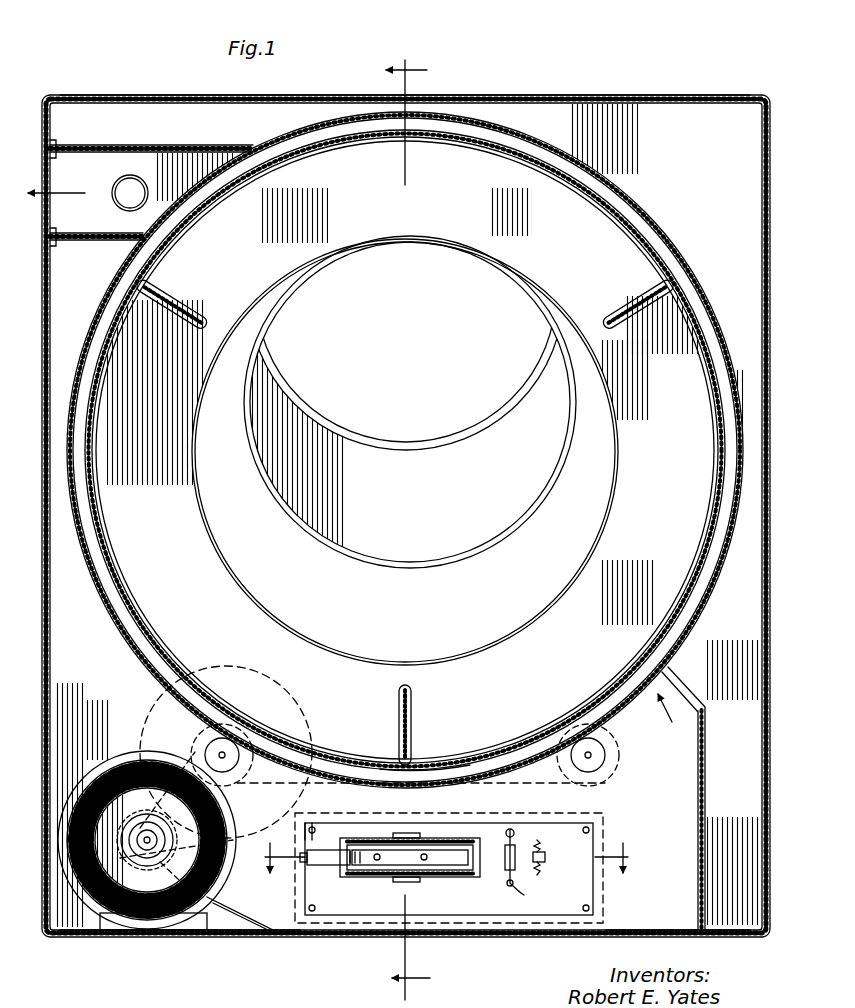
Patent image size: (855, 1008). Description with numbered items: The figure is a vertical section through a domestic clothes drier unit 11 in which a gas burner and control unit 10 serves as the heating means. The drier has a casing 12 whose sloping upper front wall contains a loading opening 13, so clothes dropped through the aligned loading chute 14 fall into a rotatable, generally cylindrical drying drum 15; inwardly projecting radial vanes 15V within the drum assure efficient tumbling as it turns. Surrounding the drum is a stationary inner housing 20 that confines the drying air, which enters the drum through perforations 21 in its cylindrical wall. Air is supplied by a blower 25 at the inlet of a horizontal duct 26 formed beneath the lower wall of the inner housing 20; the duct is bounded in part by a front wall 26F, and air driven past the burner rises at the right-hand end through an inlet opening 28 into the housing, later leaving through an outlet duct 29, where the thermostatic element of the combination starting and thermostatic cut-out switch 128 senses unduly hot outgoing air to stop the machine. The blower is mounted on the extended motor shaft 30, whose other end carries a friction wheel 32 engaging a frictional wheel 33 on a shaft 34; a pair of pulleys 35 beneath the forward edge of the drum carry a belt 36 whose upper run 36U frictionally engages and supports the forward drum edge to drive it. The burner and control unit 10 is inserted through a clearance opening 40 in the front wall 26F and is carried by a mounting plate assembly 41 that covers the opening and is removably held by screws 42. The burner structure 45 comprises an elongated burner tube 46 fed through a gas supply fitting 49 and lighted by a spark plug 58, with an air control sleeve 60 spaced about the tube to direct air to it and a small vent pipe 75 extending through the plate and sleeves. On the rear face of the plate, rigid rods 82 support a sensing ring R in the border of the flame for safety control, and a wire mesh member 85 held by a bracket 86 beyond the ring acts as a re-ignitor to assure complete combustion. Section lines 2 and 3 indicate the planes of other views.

The section line 2- 2 is at (416, 518).
The section line 3- 3 is at (448, 858).
The burner and control unit 10 is at (345, 916).
The domestic clothes drier unit 11 is at (610, 99).
The casing 12 is at (690, 98).
The loading opening 13 is at (322, 432).
The loading chute 14 is at (432, 462).
The drying drum 15 is at (620, 212).
The vanes 15V is at (194, 320).
The inner housing 20 is at (664, 234).
The perforations 21 is at (698, 585).
The blower 25 is at (132, 935).
The horizontal duct 26 is at (668, 907).
The front wall 26F is at (700, 808).
The inlet opening 28 is at (640, 698).
The outlet duct 29 is at (120, 165).
The combination starting and thermostatic cut-out switch 128 is at (143, 183).
The motor shaft 30 is at (145, 836).
The friction wheel 32 is at (142, 863).
The frictional wheel 33 is at (282, 665).
The shaft 34 is at (197, 748).
The pulleys 35 is at (238, 740).
The belt 36 is at (535, 782).
The upper run of belt 36U is at (462, 770).
The clearance opening 40 is at (562, 912).
The mounting plate assembly 41 is at (578, 846).
The screws 42 is at (310, 821).
The burner structure 45 is at (384, 880).
The burner tube 46 is at (436, 867).
The gas supply fitting 49 is at (328, 868).
The spark plug 58 is at (378, 852).
The air control sleeve 60 is at (450, 892).
The vent pipe 75 is at (426, 853).
The rigid rod 82 is at (527, 895).
The wire mesh member 85 is at (544, 872).
The bracket 86 is at (546, 856).
The sensing ring R is at (508, 868).